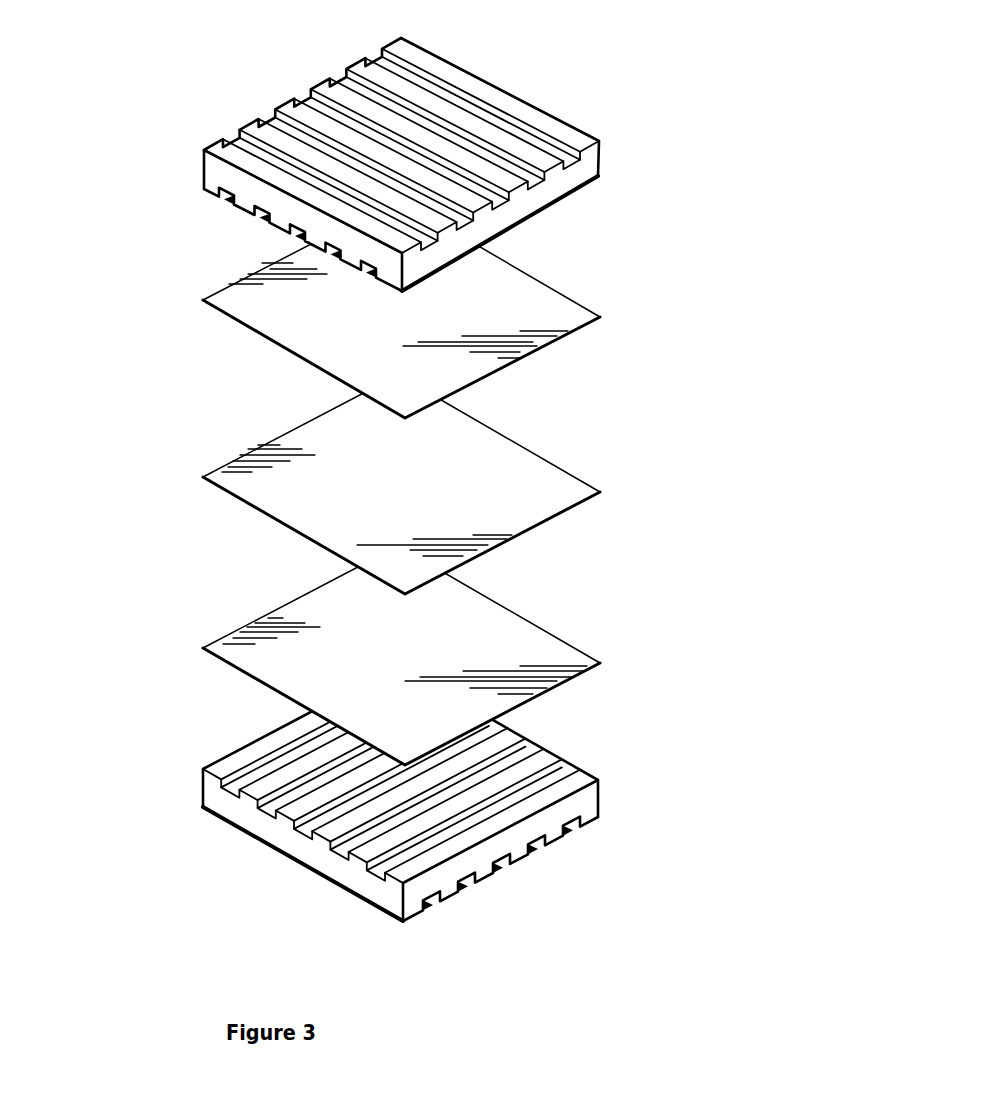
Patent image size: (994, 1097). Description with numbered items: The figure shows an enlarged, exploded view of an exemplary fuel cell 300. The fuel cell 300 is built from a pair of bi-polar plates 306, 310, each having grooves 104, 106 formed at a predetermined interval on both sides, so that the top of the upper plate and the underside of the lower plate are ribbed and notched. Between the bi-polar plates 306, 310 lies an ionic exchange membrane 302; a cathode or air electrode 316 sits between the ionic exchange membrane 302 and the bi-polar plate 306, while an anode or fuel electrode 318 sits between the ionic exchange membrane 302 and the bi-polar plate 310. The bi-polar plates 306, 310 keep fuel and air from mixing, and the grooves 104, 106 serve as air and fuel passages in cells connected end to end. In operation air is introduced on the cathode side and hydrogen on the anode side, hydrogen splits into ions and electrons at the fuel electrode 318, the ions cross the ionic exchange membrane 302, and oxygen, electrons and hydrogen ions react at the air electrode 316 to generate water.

The fuel cell 300 is at (190, 726).
The bi-polar plate 306 is at (502, 88).
The grooves 104 is at (232, 196).
The air electrode 316 is at (530, 276).
The ionic exchange membrane 302 is at (530, 450).
The fuel electrode 318 is at (527, 623).
The bi-polar plate 310 is at (600, 798).
The grooves 106 is at (382, 860).